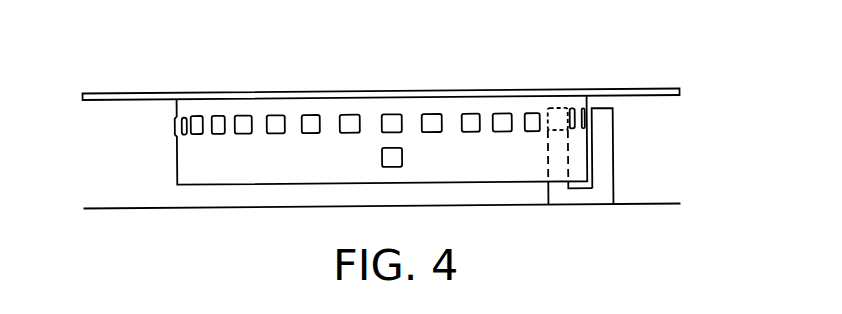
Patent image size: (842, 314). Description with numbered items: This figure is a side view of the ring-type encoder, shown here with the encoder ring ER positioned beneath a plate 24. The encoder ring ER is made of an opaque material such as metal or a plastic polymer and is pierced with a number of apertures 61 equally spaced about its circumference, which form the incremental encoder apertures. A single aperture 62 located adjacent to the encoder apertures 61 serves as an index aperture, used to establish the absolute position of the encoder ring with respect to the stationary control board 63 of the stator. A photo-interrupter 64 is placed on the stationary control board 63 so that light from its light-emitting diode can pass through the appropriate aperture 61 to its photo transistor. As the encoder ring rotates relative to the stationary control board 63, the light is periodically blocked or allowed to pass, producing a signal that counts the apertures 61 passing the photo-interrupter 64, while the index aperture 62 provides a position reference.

The plate 24 is at (635, 92).
The apertures 61 is at (468, 123).
The single aperture 62 is at (393, 167).
The stationary control board 63 is at (653, 208).
The photo-interrupter 64 is at (612, 144).
The electronic region box ER is at (277, 184).